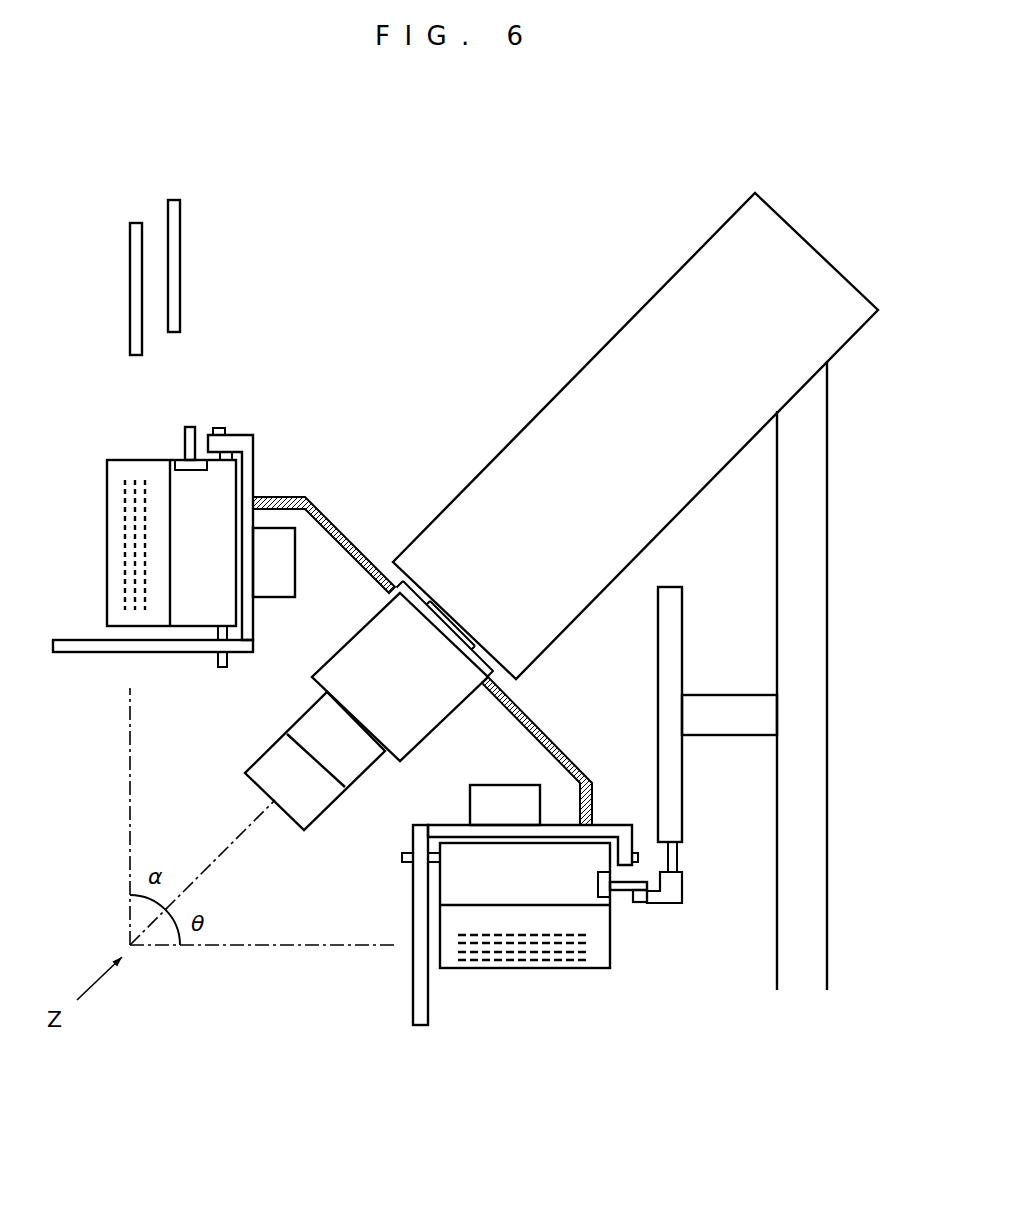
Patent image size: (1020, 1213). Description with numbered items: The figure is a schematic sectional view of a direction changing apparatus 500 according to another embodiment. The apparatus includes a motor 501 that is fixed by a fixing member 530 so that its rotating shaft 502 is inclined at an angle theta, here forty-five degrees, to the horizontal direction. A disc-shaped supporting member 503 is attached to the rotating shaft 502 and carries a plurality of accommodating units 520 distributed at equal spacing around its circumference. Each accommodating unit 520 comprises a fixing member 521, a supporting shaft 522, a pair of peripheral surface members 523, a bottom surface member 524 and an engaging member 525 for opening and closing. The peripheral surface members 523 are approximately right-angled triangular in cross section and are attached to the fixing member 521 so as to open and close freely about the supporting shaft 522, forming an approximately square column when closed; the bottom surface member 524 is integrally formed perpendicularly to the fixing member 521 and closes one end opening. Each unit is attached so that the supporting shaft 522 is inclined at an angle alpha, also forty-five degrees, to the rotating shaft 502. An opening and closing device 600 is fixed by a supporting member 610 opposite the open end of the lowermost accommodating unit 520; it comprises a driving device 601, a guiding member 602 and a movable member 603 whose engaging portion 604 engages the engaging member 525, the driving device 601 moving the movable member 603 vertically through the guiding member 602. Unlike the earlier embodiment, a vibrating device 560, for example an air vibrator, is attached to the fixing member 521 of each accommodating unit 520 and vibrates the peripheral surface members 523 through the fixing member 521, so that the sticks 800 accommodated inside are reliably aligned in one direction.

The direction changing apparatus 500 is at (430, 255).
The motor 501 is at (633, 370).
The rotating shaft 502 is at (282, 787).
The supporting member 503 is at (350, 538).
The accommodating unit 520 is at (145, 700).
The fixing member 521 is at (253, 443).
The supporting shaft 522 is at (223, 662).
The peripheral surface member 523 is at (118, 582).
The bottom surface member 524 is at (145, 655).
The engaging member 525 is at (187, 427).
The fixing member 530 is at (812, 852).
The vibrating device 560 is at (297, 570).
The opening and closing device 600 is at (693, 913).
The driving device 601 is at (663, 618).
The guiding member 602 is at (678, 857).
The movable member 603 is at (672, 892).
The engaging portion 604 is at (643, 897).
The supporting member 610 is at (720, 703).
The stick 800 is at (133, 252).